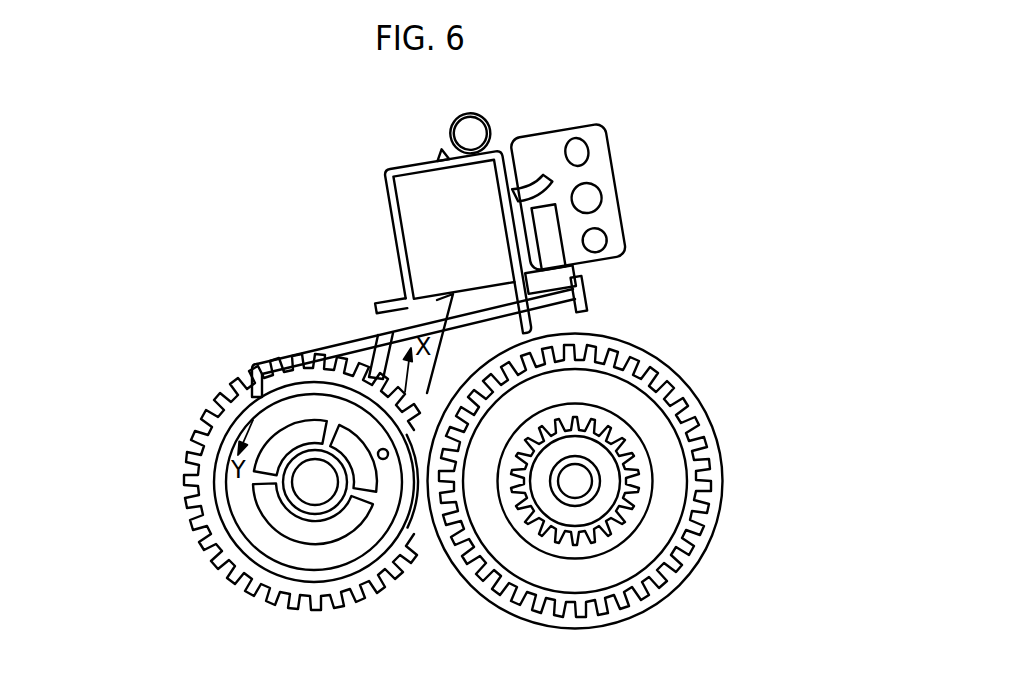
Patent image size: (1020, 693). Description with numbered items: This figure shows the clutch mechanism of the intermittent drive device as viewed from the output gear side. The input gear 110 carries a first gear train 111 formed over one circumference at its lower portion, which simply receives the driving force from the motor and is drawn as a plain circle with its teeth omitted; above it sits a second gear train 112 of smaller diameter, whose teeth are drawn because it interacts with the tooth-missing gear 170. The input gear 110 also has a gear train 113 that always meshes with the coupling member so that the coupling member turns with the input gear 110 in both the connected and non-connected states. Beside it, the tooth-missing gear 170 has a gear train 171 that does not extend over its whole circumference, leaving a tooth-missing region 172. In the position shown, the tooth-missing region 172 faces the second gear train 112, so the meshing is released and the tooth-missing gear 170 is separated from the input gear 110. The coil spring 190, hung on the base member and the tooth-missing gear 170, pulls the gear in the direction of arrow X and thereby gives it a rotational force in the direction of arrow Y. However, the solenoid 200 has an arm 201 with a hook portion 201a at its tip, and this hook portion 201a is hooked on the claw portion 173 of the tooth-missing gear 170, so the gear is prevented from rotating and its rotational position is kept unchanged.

The input gear 110 is at (667, 334).
The first gear train 111 is at (700, 406).
The second gear train 112 is at (711, 448).
The gear train 113 is at (642, 513).
The tooth-missing gear 170 is at (180, 393).
The gear train 171 is at (178, 473).
The tooth-missing region 172 is at (421, 528).
The claw portion 173 is at (284, 372).
The coil spring 190 is at (422, 311).
The solenoid 200 is at (398, 128).
The arm 201 is at (357, 333).
The hook portion 201a is at (243, 389).